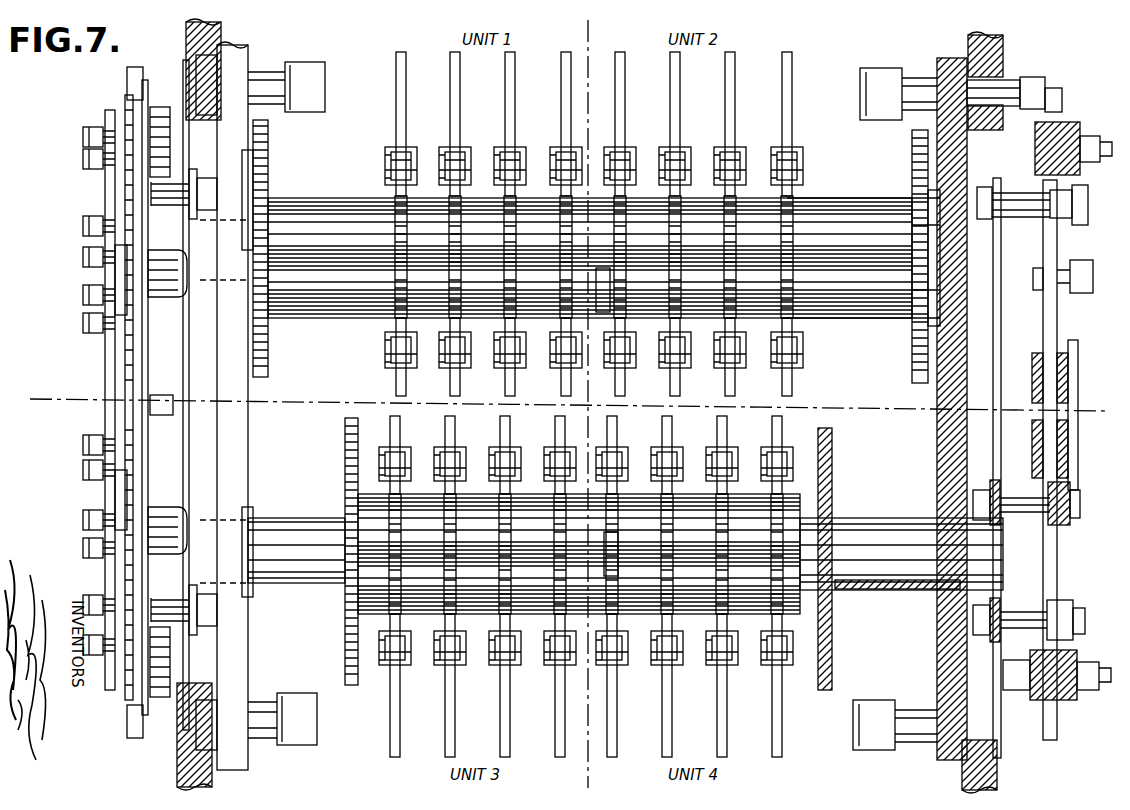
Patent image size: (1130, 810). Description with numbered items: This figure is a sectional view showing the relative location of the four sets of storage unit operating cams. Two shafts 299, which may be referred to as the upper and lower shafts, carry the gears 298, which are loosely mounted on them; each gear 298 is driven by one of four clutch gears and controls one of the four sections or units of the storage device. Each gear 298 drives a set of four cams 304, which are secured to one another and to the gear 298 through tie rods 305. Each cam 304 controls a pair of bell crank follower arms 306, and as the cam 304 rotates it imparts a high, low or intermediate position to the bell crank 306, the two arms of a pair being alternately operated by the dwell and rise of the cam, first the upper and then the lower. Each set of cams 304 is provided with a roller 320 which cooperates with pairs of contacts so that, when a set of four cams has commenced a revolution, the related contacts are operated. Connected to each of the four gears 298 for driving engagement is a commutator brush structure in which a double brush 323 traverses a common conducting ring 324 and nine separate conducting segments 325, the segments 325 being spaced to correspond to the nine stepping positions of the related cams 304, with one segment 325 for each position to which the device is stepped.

The gear 298 is at (270, 142).
The shaft 299 is at (830, 247).
The cam 304 is at (404, 397).
The tie rod 305 is at (335, 302).
The bell crank follower arm 306 is at (566, 85).
The roller 320 is at (626, 287).
The double brush 323 is at (1037, 266).
The common conducting ring 324 is at (128, 345).
The conducting segment 325 is at (100, 235).